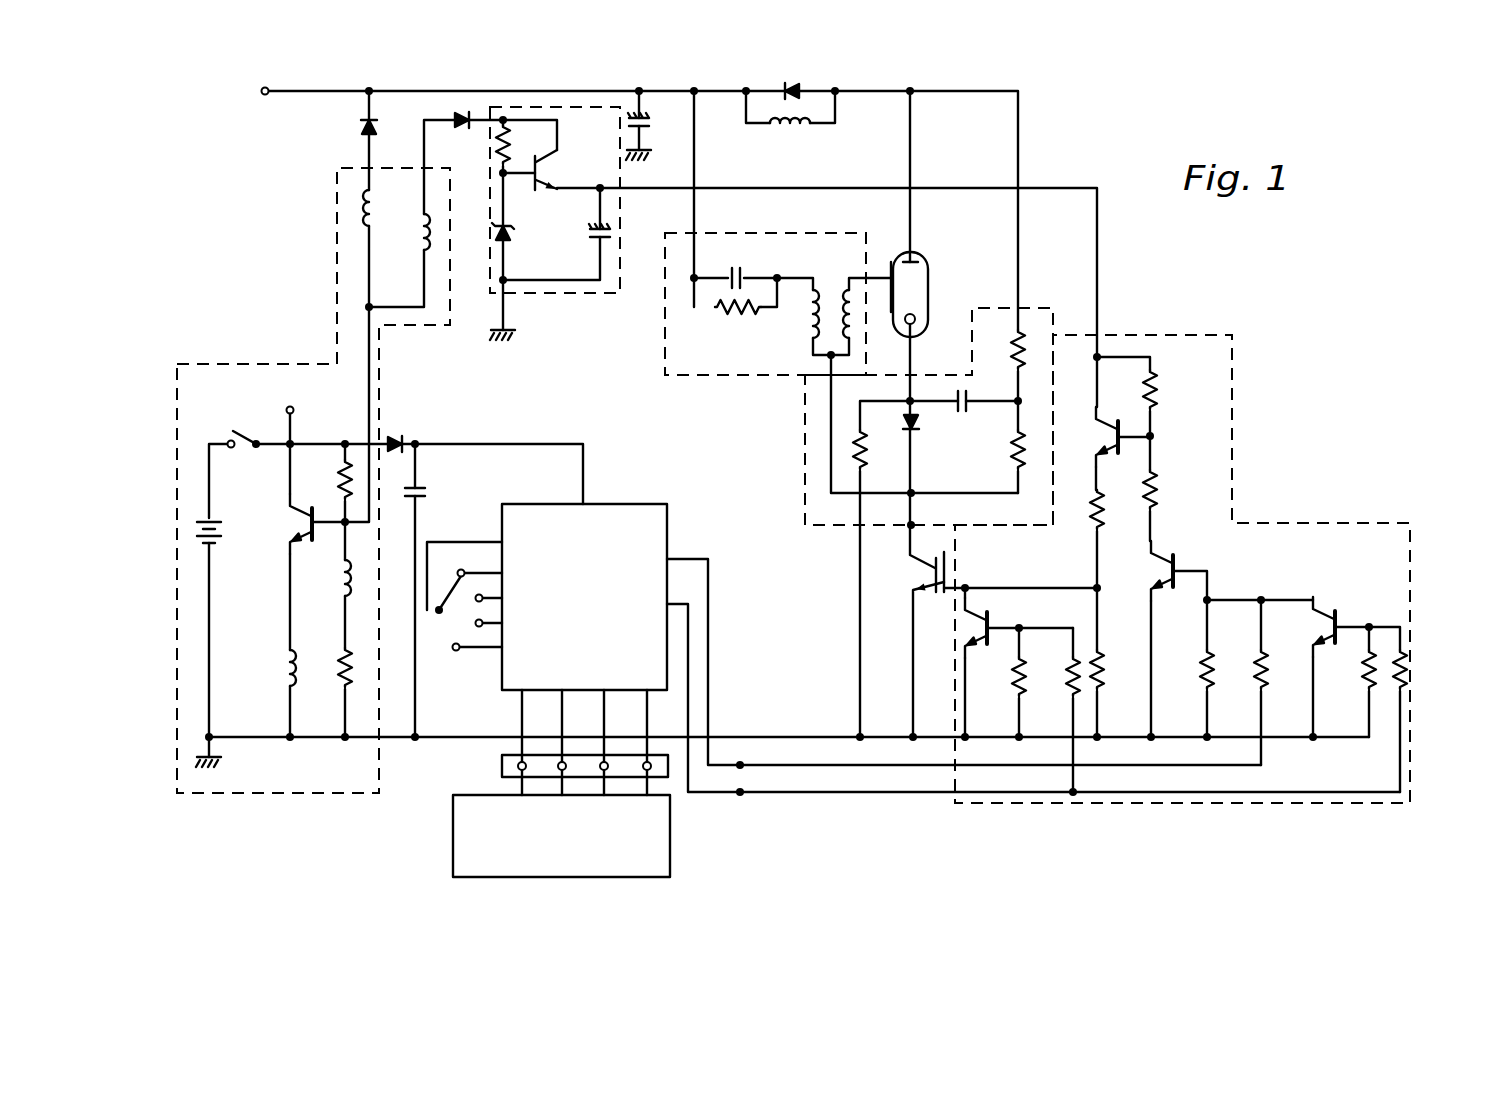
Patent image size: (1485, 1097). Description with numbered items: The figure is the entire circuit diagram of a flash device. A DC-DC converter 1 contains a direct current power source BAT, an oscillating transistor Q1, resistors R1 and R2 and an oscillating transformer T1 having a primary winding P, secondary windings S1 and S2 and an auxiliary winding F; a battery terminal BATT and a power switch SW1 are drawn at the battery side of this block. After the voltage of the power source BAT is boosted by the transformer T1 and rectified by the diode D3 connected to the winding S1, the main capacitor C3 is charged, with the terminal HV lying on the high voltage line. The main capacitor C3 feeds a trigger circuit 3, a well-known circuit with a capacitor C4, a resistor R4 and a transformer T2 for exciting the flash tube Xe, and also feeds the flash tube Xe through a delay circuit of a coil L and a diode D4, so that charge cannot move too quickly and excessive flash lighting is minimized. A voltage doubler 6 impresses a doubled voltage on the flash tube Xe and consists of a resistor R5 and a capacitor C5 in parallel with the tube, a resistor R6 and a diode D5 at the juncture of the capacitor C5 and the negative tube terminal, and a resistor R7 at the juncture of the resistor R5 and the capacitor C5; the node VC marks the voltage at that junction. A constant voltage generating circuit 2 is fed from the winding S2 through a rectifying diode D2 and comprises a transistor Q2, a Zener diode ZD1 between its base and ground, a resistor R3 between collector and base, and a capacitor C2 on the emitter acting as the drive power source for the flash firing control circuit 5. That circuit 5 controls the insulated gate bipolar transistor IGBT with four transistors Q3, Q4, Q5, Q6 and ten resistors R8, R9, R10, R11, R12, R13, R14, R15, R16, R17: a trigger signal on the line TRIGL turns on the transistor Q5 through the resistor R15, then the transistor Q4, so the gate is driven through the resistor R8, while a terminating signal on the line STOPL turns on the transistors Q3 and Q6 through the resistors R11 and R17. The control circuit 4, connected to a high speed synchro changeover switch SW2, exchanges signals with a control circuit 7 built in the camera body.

The DC-DC converter 1 is at (324, 793).
The constant voltage generating circuit 2 is at (577, 293).
The trigger circuit 3 is at (717, 375).
The control circuit 4 is at (617, 503).
The flash firing control circuit 5 is at (1233, 393).
The voltage doubler 6 is at (805, 445).
The control circuit built in a camera body 7 is at (672, 842).
The terminal HV is at (243, 93).
The rectifying diode D2 is at (460, 114).
The rectifying diode D3 is at (347, 129).
The diode D4 is at (796, 70).
The diode D5 is at (893, 424).
The resistor R1 is at (327, 502).
The resistor R2 is at (342, 672).
The resistor R3 is at (496, 146).
The resistor R4 is at (738, 325).
The resistor R5 is at (1019, 330).
The resistor R6 is at (880, 455).
The resistor R7 is at (1000, 456).
The resistor R8 is at (1117, 509).
The resistor R9 is at (1118, 671).
The resistor R10 is at (1017, 663).
The resistor R11 is at (1070, 663).
The resistor R12 is at (1175, 390).
The resistor R13 is at (1175, 490).
The resistor R14 is at (1213, 653).
The resistor R15 is at (1267, 685).
The resistor R16 is at (1374, 653).
The resistor R17 is at (1408, 680).
The secondary winding S1 is at (384, 206).
The secondary winding S2 is at (405, 233).
The primary winding P is at (280, 645).
The auxiliary winding F is at (358, 604).
The oscillating transformer T1 is at (312, 604).
The transformer T2 is at (831, 288).
The oscillating transistor Q1 is at (301, 499).
The transistor Q2 is at (549, 170).
The transistor Q3 is at (1019, 662).
The transistor Q4 is at (1089, 437).
The transistor Q5 is at (1143, 571).
The transistor Q6 is at (1305, 627).
The Zener diode ZD1 is at (528, 234).
The capacitor C2 is at (606, 228).
The main capacitor C3 is at (659, 122).
The capacitor C4 is at (737, 260).
The capacitor C5 is at (969, 408).
The coil L is at (790, 141).
The flash tube Xe is at (928, 283).
The insulated gate bipolar transistor IGBT is at (952, 570).
The capacitor voltage node VC is at (914, 524).
The power switch SW1 is at (240, 430).
The high speed synchro changeover switch SW2 is at (451, 618).
The direct current power source BAT is at (222, 528).
The battery terminal BATT is at (290, 409).
The trigger line TRIGL is at (964, 663).
The stop line STOPL is at (1033, 700).